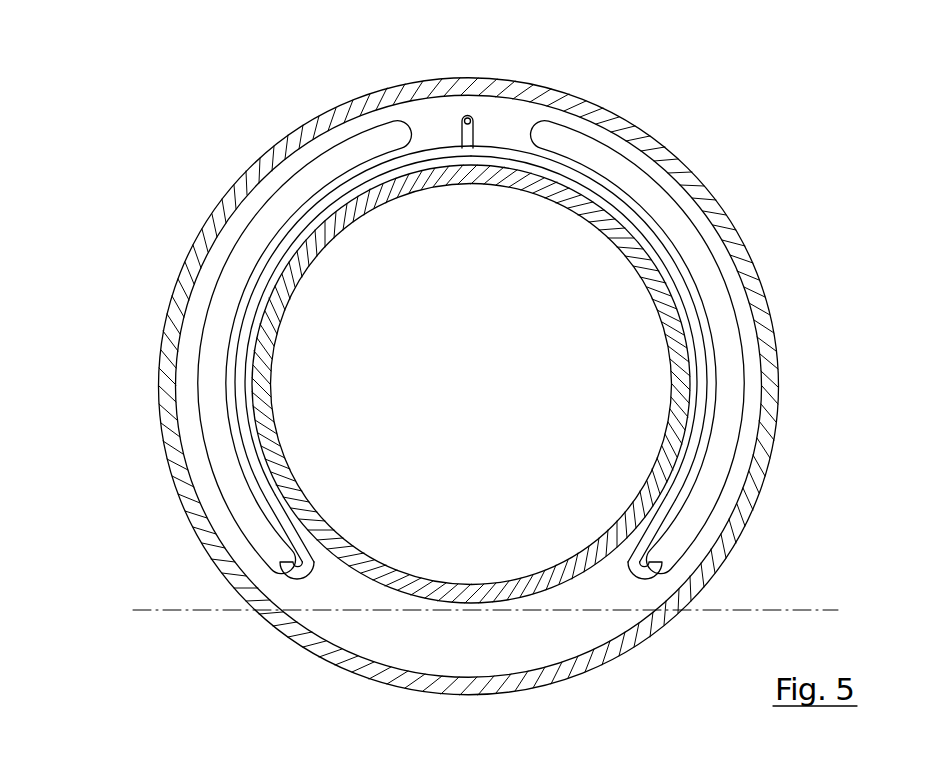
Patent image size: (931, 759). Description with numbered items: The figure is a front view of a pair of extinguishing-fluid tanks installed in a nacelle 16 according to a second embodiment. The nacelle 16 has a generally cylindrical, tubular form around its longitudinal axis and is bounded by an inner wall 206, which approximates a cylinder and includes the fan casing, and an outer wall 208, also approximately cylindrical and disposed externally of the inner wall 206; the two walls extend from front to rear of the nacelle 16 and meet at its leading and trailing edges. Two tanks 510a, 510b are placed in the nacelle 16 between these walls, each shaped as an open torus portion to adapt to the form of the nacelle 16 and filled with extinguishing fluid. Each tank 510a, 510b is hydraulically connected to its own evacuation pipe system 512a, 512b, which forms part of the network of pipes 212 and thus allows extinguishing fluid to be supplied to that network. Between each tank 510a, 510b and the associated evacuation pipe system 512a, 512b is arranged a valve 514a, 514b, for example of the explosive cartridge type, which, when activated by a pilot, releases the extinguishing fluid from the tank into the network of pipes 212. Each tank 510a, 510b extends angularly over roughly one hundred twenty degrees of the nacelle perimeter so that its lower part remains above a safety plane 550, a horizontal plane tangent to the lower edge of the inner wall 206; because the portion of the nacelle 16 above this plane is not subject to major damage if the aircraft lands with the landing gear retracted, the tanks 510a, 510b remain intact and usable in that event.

The nacelle 16 is at (145, 340).
The inner wall 206 is at (260, 443).
The outer wall 208 is at (780, 337).
The network of pipes 212 is at (476, 118).
The tank 510a is at (250, 245).
The tank 510b is at (652, 198).
The evacuation pipe system 512a is at (257, 298).
The evacuation pipe system 512b is at (700, 364).
The valve 514a is at (325, 568).
The valve 514b is at (633, 572).
The safety plane 550 is at (182, 612).